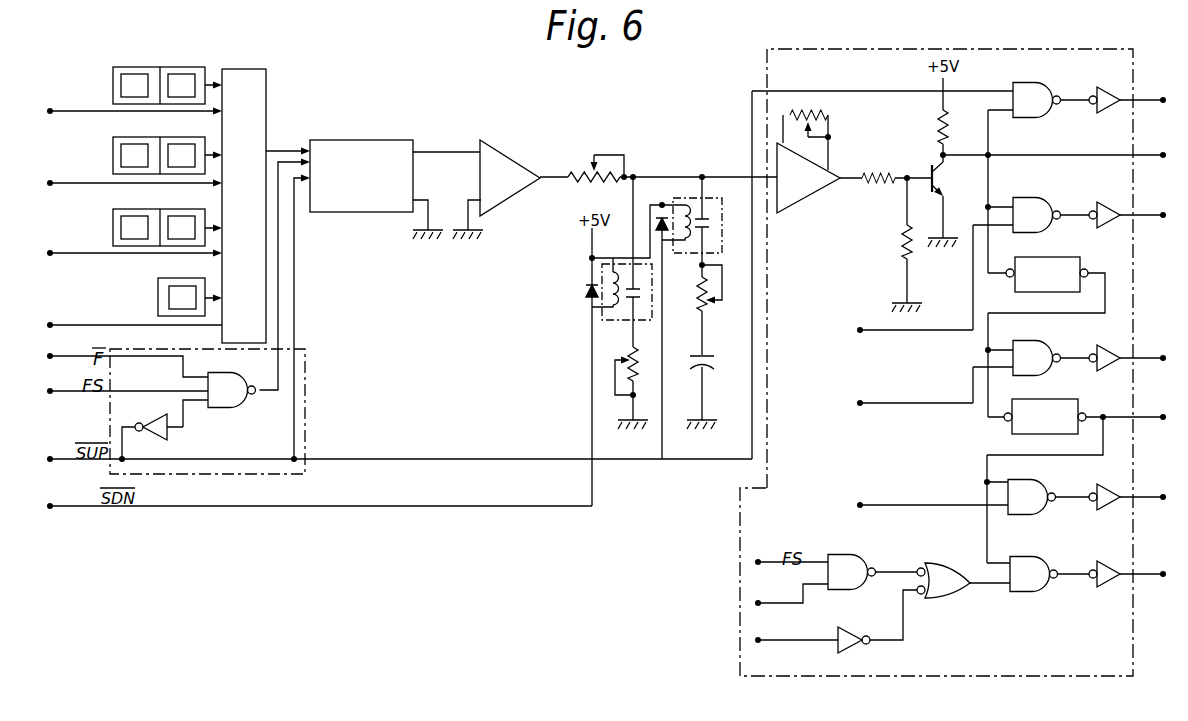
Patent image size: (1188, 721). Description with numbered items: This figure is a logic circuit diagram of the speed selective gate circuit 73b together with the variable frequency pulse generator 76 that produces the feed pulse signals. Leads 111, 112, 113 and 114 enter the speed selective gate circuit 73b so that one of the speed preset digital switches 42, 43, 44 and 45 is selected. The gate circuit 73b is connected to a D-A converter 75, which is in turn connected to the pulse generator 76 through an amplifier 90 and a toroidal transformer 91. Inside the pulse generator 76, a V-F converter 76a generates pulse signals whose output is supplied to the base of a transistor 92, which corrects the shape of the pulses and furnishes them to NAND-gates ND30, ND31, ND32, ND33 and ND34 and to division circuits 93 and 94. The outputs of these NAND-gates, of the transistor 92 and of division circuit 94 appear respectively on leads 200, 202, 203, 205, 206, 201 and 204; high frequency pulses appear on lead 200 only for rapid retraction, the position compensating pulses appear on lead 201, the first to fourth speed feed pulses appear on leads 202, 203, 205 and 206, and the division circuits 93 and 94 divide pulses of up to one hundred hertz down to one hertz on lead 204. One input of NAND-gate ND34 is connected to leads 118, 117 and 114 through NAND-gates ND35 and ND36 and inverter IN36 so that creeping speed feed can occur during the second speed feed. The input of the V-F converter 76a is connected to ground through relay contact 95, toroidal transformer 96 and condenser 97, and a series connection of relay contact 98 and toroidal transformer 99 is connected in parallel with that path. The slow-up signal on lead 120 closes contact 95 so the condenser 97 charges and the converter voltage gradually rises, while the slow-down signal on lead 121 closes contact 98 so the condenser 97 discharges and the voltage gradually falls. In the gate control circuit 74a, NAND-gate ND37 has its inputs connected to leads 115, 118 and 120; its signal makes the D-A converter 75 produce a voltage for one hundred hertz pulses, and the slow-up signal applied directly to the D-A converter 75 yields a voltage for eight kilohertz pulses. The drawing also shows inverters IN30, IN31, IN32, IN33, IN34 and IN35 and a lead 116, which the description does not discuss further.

The speed preset digital switch 42 is at (190, 67).
The speed preset digital switch 43 is at (180, 137).
The speed preset digital switch 44 is at (178, 209).
The speed preset digital switch 45 is at (178, 278).
The speed selective gate circuit 73b is at (262, 69).
The gate control circuit 74a is at (306, 352).
The D-A converter 75 is at (365, 140).
The variable frequency pulse generator 76 is at (992, 49).
The V-F converter 76a is at (834, 160).
The amplifier 90 is at (512, 150).
The toroidal transformer 91 is at (604, 153).
The transistor 92 is at (938, 150).
The division circuit 93 is at (1060, 257).
The division circuit 94 is at (1060, 399).
The relay contact 95 is at (722, 214).
The toroidal transformer 96 is at (716, 302).
The condenser 97 is at (712, 356).
The relay contact 98 is at (637, 292).
The toroidal transformer 99 is at (636, 350).
The lead 111 is at (50, 111).
The lead 112 is at (50, 183).
The lead 113 is at (50, 253).
The lead 114 is at (50, 325).
The lead 115 is at (60, 355).
The input line FS 116 is at (58, 386).
The lead 117 is at (758, 603).
The lead 118 is at (758, 562).
The lead 120 is at (50, 459).
The lead 121 is at (50, 506).
The lead 200 is at (1163, 97).
The lead 201 is at (1163, 152).
The lead 202 is at (1163, 212).
The lead 203 is at (1163, 356).
The lead 204 is at (1163, 415).
The lead 205 is at (1163, 494).
The lead 206 is at (1163, 571).
The NAND-gate ND30 is at (1050, 77).
The NAND-gate ND31 is at (1050, 192).
The NAND-gate ND32 is at (1054, 345).
The NAND-gate ND33 is at (1052, 480).
The NAND-gate ND34 is at (1050, 555).
The NAND-gate ND35 is at (852, 556).
The NAND-gate ND36 is at (946, 563).
The NAND-gate ND37 is at (224, 376).
The inverter IN30 is at (1112, 80).
The inverter IN31 is at (1112, 197).
The inverter IN32 is at (1108, 347).
The inverter IN33 is at (1108, 482).
The inverter IN34 is at (1108, 560).
The inverter IN35 is at (156, 418).
The inverter IN36 is at (854, 626).